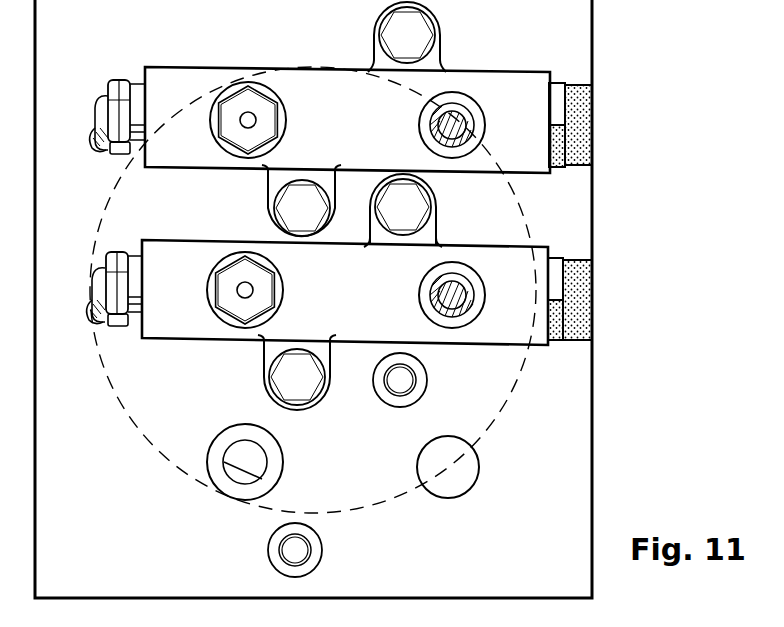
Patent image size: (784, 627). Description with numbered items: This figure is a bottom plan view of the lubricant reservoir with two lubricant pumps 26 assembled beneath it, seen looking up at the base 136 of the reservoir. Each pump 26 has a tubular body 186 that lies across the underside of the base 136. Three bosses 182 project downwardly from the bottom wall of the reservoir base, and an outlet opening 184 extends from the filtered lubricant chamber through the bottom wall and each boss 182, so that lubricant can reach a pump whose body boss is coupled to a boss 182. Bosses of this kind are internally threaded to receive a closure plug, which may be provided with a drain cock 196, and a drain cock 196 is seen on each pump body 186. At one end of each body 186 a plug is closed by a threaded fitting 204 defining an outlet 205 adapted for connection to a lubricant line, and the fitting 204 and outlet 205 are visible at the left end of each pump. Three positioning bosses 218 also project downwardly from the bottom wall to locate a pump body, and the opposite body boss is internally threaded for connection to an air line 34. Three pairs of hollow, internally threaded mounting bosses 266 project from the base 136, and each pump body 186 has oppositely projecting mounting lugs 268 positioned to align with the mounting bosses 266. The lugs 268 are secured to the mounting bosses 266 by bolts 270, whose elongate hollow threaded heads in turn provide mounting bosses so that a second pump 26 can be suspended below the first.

The lubricant pump 26 is at (203, 62).
The air line 34 is at (448, 300).
The base 136 is at (583, 497).
The boss 182 is at (278, 459).
The outlet opening 184 is at (229, 453).
The tubular body 186 is at (400, 155).
The drain cock 196 is at (266, 118).
The threaded fitting 204 is at (112, 155).
The outlet 205 is at (95, 128).
The positioning boss 218 is at (478, 470).
The mounting boss 266 is at (416, 393).
The mounting lug 268 is at (430, 66).
The bolt 270 is at (420, 32).